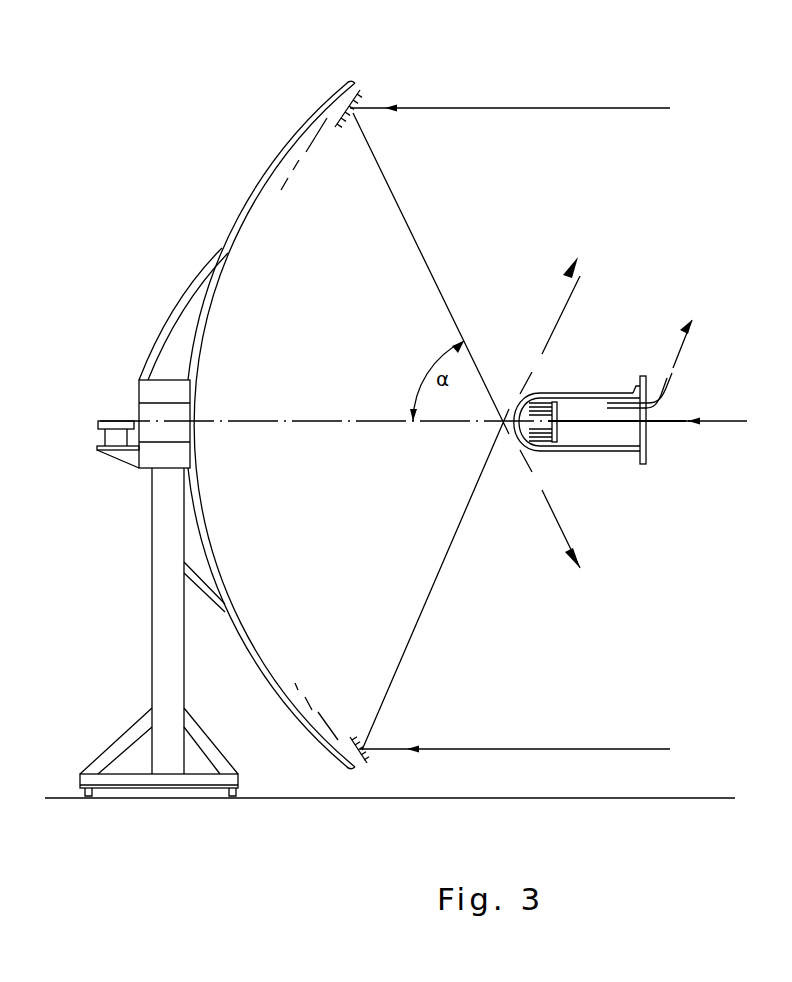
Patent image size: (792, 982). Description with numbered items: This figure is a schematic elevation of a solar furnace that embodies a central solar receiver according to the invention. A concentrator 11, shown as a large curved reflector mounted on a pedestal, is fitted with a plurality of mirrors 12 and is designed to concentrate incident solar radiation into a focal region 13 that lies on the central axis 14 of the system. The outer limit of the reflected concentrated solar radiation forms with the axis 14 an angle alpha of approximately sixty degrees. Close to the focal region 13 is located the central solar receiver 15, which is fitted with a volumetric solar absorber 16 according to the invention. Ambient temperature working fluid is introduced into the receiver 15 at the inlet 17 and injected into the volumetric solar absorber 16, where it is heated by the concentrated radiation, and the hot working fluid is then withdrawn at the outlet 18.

The concentrator 11 is at (249, 197).
The mirrors 12 is at (356, 98).
The focal region 13 is at (500, 424).
The central axis 14 is at (309, 420).
The central solar receiver 15 is at (580, 393).
The volumetric solar absorber 16 is at (538, 441).
The working fluid inlet 17 is at (672, 424).
The hot working fluid outlet 18 is at (681, 350).